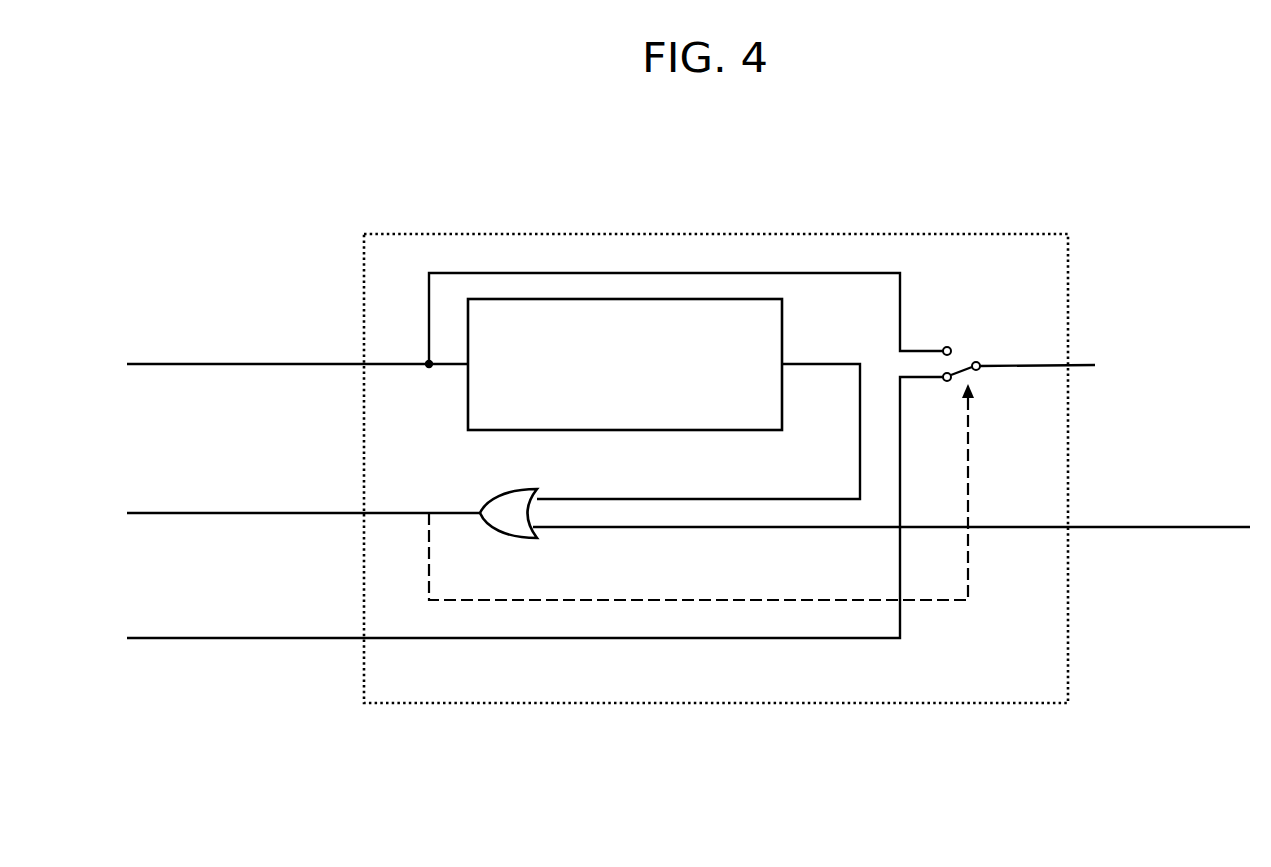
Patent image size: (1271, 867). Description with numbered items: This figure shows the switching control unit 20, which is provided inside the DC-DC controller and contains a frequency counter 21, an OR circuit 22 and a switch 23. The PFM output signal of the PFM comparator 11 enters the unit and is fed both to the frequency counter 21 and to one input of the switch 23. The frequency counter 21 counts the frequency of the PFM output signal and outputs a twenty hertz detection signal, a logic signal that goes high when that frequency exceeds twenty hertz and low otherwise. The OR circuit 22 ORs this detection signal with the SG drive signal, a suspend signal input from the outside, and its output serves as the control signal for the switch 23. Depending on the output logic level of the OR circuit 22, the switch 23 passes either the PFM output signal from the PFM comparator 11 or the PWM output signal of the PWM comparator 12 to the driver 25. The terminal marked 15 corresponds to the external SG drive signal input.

The PFM comparator 11 is at (510, 326).
The PWM comparator 12 is at (510, 515).
The SG drive signal input 15 is at (279, 503).
The switching control unit 20 is at (722, 704).
The frequency counter 21 is at (467, 401).
The OR circuit 22 is at (526, 489).
The switch 23 is at (974, 363).
The driver 25 is at (1063, 366).